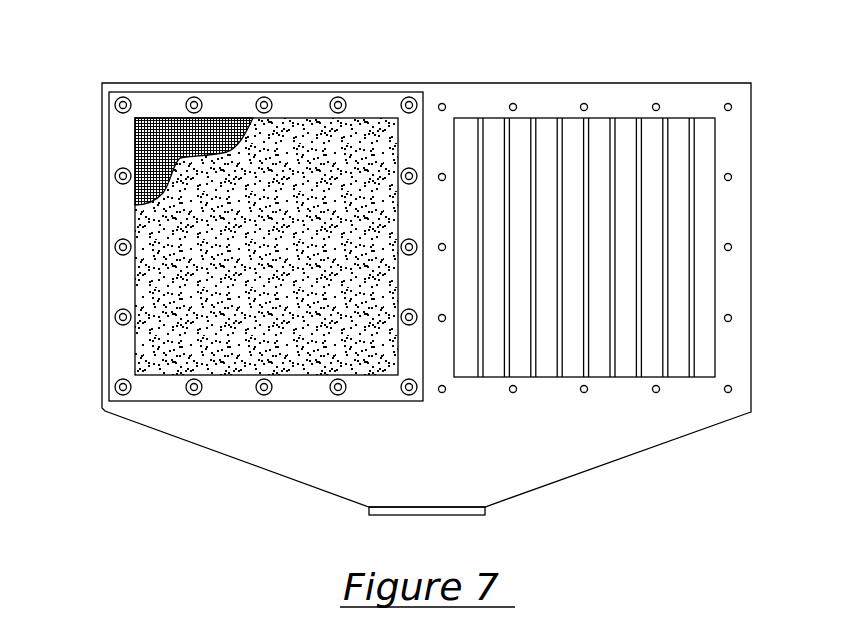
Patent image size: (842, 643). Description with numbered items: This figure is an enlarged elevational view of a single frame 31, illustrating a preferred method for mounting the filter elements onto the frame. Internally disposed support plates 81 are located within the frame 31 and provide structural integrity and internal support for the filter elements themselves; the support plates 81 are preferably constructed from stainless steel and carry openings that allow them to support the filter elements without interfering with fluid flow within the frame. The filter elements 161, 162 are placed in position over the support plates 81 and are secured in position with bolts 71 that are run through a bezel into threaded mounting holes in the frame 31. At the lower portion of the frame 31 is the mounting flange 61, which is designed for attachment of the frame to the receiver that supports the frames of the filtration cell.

The frame 31 is at (697, 100).
The mounting flange 61 is at (476, 509).
The bolts 71 is at (334, 98).
The support plates 81 is at (611, 137).
The filter element 161 is at (148, 280).
The filter element 162 is at (140, 150).